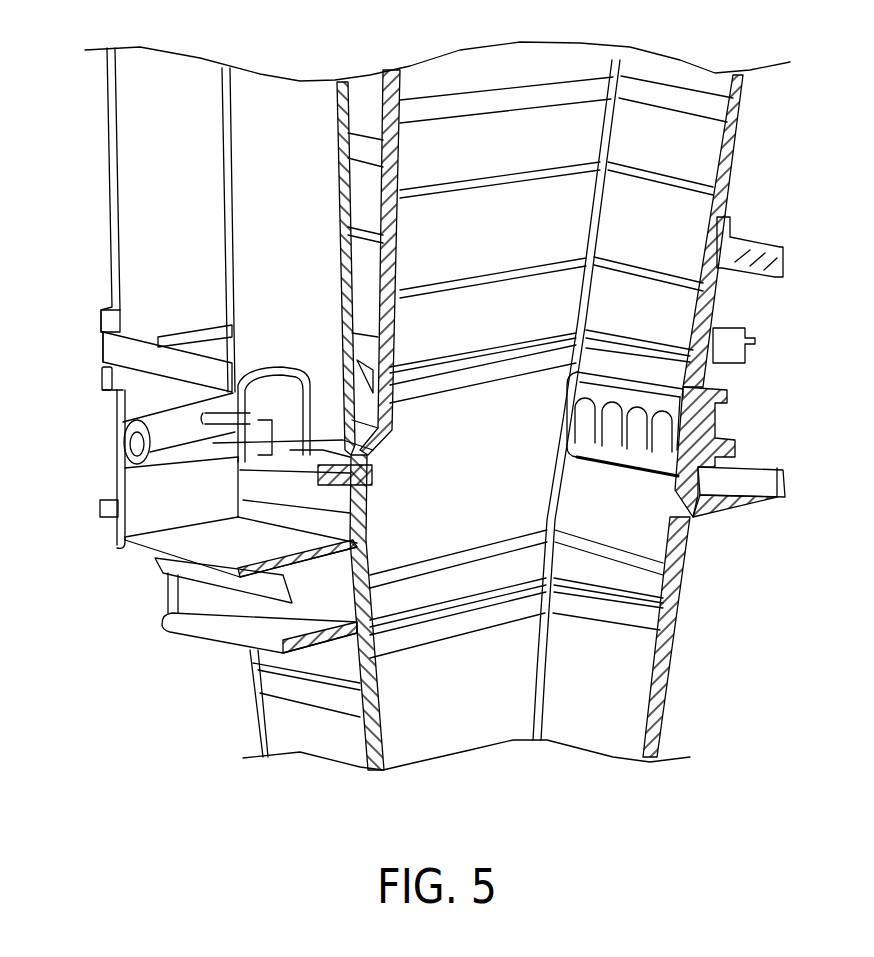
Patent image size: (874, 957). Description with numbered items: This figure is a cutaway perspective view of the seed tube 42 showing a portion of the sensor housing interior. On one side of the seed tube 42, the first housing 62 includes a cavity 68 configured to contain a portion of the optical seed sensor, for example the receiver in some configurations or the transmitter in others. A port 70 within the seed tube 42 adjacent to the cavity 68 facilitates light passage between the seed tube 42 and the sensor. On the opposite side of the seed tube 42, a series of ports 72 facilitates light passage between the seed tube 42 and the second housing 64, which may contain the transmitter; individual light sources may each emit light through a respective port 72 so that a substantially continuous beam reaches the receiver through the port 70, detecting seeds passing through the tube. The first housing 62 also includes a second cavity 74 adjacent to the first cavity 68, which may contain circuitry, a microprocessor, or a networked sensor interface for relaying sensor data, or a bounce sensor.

The seed tube 42 is at (742, 108).
The first housing 62 is at (115, 187).
The second housing 64 is at (740, 480).
The cavity 68 is at (150, 488).
The port 70 is at (327, 487).
The ports 72 is at (612, 428).
The second cavity 74 is at (145, 115).